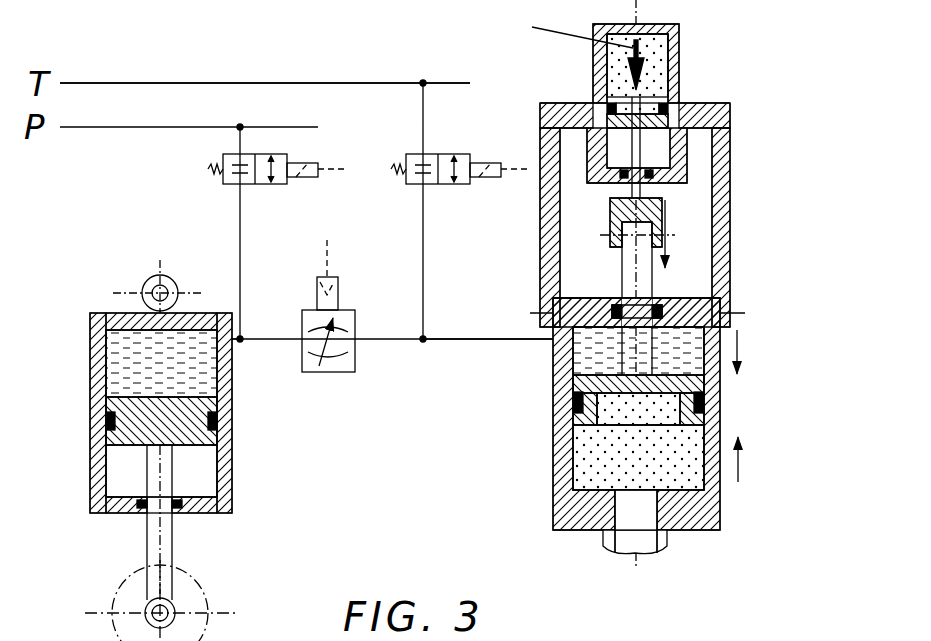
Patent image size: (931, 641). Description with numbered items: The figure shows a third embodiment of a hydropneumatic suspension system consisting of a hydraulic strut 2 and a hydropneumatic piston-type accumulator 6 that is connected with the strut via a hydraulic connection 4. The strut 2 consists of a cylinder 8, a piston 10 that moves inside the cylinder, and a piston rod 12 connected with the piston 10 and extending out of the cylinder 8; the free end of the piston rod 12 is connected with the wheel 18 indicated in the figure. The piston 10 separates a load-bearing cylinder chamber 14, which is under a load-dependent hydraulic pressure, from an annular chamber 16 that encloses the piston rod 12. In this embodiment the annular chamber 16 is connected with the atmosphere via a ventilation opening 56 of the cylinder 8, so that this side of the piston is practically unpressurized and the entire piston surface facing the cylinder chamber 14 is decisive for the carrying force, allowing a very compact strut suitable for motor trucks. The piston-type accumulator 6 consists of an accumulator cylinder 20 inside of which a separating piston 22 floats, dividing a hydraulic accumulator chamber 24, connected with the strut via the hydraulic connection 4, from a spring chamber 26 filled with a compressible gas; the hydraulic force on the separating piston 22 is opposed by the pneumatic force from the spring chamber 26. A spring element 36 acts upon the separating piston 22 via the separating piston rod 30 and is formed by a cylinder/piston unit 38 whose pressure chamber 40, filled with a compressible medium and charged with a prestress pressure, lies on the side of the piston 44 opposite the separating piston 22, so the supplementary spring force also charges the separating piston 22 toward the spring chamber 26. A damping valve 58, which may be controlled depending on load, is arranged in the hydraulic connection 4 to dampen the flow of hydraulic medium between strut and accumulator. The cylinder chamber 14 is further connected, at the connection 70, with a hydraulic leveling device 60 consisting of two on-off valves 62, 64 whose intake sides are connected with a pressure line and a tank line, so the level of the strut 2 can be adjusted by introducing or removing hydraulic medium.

The hydraulic strut 2 is at (86, 500).
The hydraulic connection 4 is at (483, 340).
The hydropneumatic piston-type accumulator 6 is at (550, 521).
The cylinder 8 is at (218, 468).
The piston 10 is at (112, 440).
The piston rod 12 is at (165, 545).
The cylinder chamber 14 is at (115, 372).
The annular chamber 16 is at (120, 472).
The wheel 18 is at (207, 593).
The accumulator cylinder 20 is at (565, 470).
The separating piston 22 is at (595, 382).
The hydraulic accumulator chamber 24 is at (680, 355).
The spring chamber 26 is at (675, 472).
The separating piston rod 30 is at (640, 280).
The spring element 36 is at (684, 78).
The cylinder/piston unit 38 is at (594, 94).
The pressure chamber 40 is at (650, 52).
The piston 44 is at (660, 125).
The ventilation opening 56 is at (118, 505).
The damping valve 58 is at (360, 357).
The hydraulic leveling device 60 is at (325, 105).
The on-off valve 62 is at (228, 188).
The on-off valve 64 is at (415, 188).
The port connection 70 is at (233, 344).